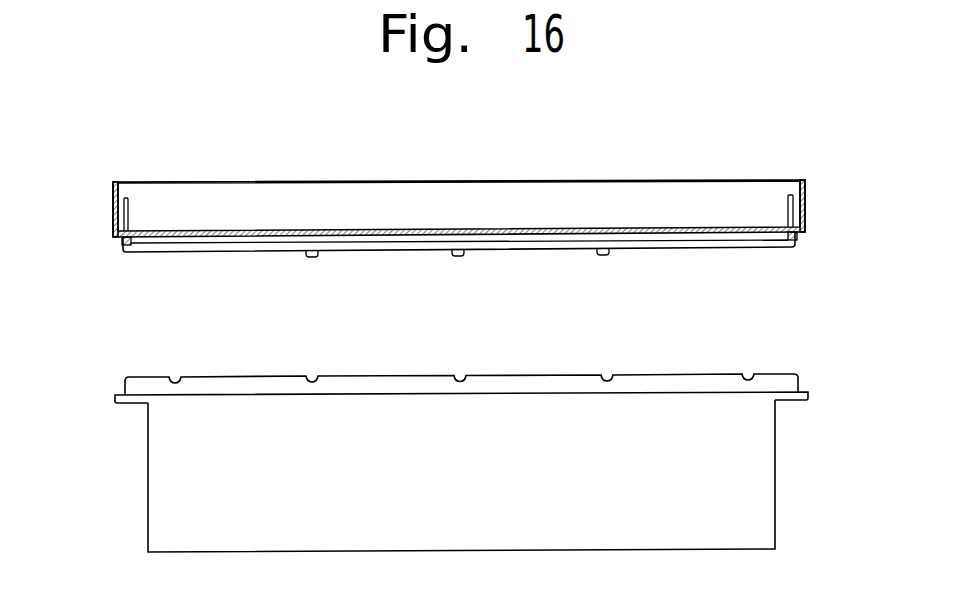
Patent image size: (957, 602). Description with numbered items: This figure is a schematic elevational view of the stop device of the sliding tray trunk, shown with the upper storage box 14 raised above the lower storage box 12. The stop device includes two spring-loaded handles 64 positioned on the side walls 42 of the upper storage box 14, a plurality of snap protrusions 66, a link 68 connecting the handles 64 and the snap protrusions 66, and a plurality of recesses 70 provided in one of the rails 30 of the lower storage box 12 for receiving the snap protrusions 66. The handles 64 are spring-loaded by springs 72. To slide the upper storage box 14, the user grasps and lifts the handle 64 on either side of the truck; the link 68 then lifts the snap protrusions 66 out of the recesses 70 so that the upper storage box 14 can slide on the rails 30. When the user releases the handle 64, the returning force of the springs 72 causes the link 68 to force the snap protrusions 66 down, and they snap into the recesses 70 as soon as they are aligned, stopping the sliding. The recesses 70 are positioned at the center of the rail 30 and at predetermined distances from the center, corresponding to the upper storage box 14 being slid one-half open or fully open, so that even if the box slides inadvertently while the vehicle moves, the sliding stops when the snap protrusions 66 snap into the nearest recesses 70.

The lower storage box 12 is at (775, 480).
The upper storage box 14 is at (628, 180).
The rails 30 is at (462, 355).
The side walls 42 is at (113, 207).
The spring-loaded handles 64 is at (130, 208).
The snap protrusions 66 is at (312, 258).
The link 68 is at (163, 252).
The recesses 70 is at (460, 379).
The springs 72 is at (122, 244).